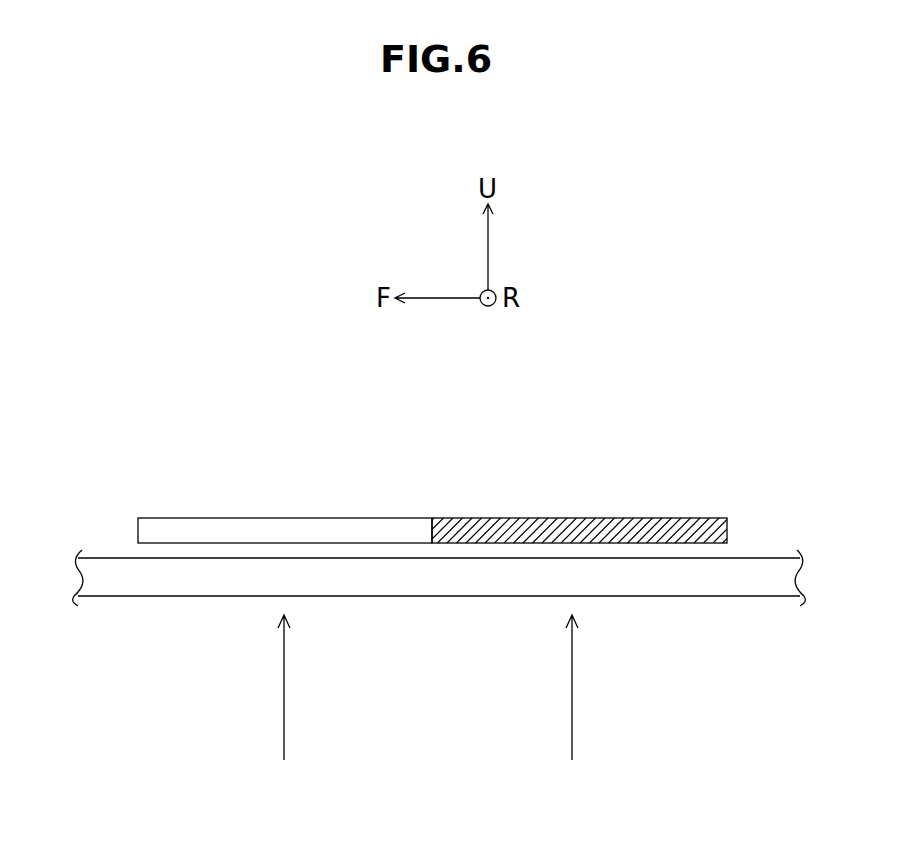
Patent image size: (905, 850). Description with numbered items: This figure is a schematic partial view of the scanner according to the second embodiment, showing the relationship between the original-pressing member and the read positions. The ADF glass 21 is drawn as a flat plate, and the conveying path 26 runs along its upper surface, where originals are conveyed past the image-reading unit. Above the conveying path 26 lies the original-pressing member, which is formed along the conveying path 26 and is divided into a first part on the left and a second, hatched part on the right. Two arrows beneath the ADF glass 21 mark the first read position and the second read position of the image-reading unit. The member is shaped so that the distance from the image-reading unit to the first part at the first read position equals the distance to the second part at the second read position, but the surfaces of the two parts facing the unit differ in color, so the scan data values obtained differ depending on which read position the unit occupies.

The ADF glass 21 is at (112, 583).
The conveying path 26 is at (257, 557).